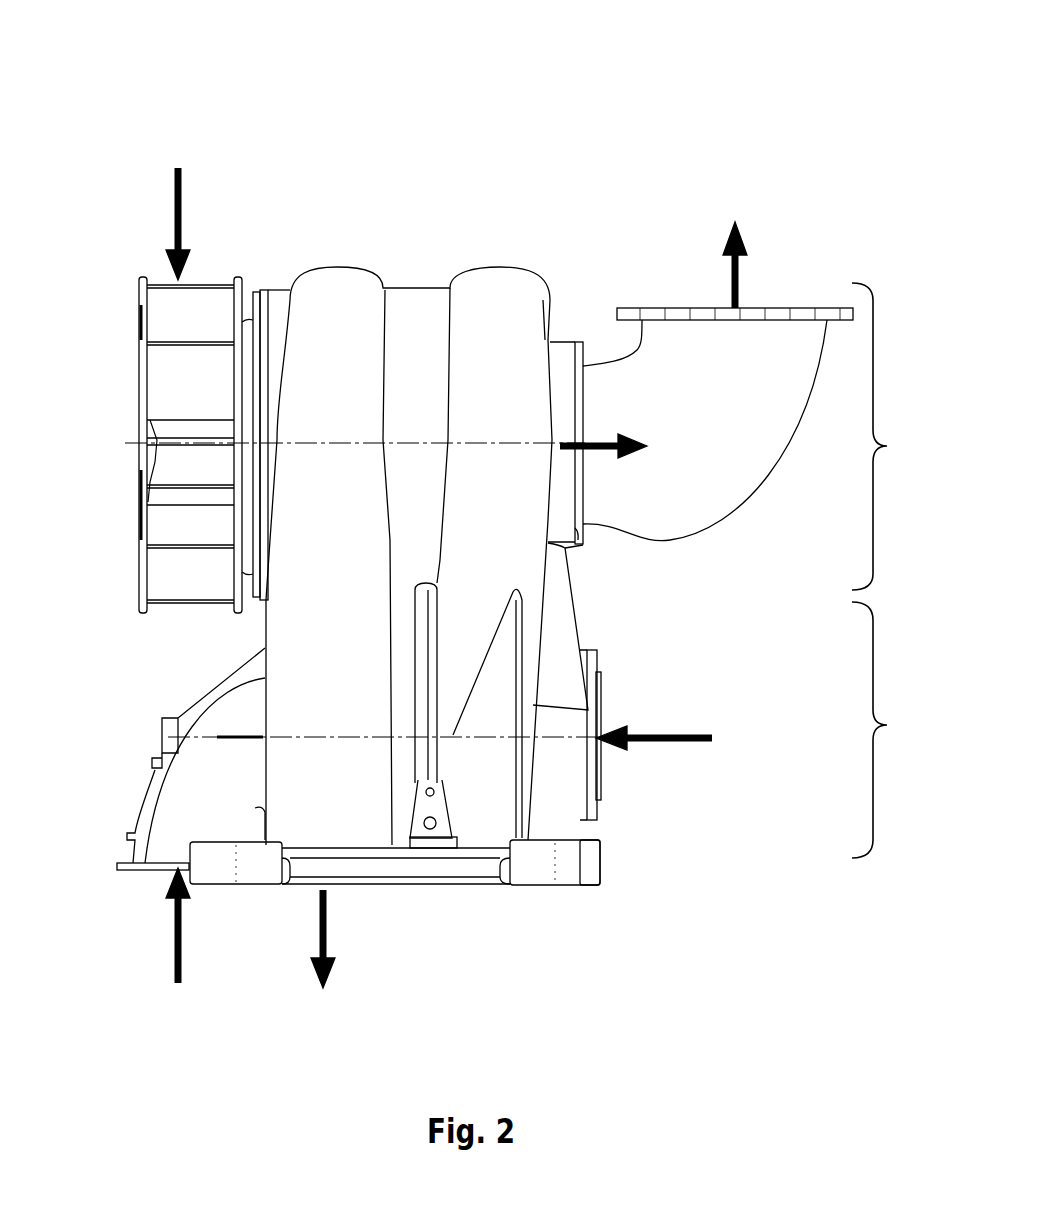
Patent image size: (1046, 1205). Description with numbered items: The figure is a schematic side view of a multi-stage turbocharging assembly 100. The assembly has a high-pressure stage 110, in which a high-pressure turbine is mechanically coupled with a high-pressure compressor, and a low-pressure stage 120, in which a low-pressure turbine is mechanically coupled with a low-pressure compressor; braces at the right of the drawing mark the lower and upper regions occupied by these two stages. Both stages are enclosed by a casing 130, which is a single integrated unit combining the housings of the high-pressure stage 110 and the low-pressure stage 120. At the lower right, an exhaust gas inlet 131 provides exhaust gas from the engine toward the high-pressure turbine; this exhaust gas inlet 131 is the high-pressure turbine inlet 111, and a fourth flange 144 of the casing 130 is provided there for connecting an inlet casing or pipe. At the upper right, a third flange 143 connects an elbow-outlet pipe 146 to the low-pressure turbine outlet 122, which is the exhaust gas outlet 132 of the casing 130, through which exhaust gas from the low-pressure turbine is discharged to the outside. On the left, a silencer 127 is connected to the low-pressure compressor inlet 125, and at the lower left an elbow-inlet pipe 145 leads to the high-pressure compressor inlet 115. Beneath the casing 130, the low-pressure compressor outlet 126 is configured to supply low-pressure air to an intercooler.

The multi-stage turbocharging assembly 100 is at (555, 186).
The high-pressure stage 110 is at (944, 737).
The high-pressure turbine inlet 111 is at (695, 705).
The high-pressure compressor inlet 115 is at (182, 950).
The low-pressure stage 120 is at (944, 457).
The low-pressure turbine outlet 122 is at (603, 442).
The low-pressure compressor inlet 125 is at (182, 195).
The low-pressure compressor outlet 126 is at (327, 920).
The silencer 127 is at (160, 393).
The casing 130 is at (420, 292).
The exhaust gas inlet 131 is at (666, 735).
The exhaust gas outlet 132 is at (730, 278).
The third flange 143 is at (578, 534).
The fourth flange 144 is at (600, 818).
The elbow-inlet pipe 145 is at (150, 800).
The elbow-outlet pipe 146 is at (718, 500).